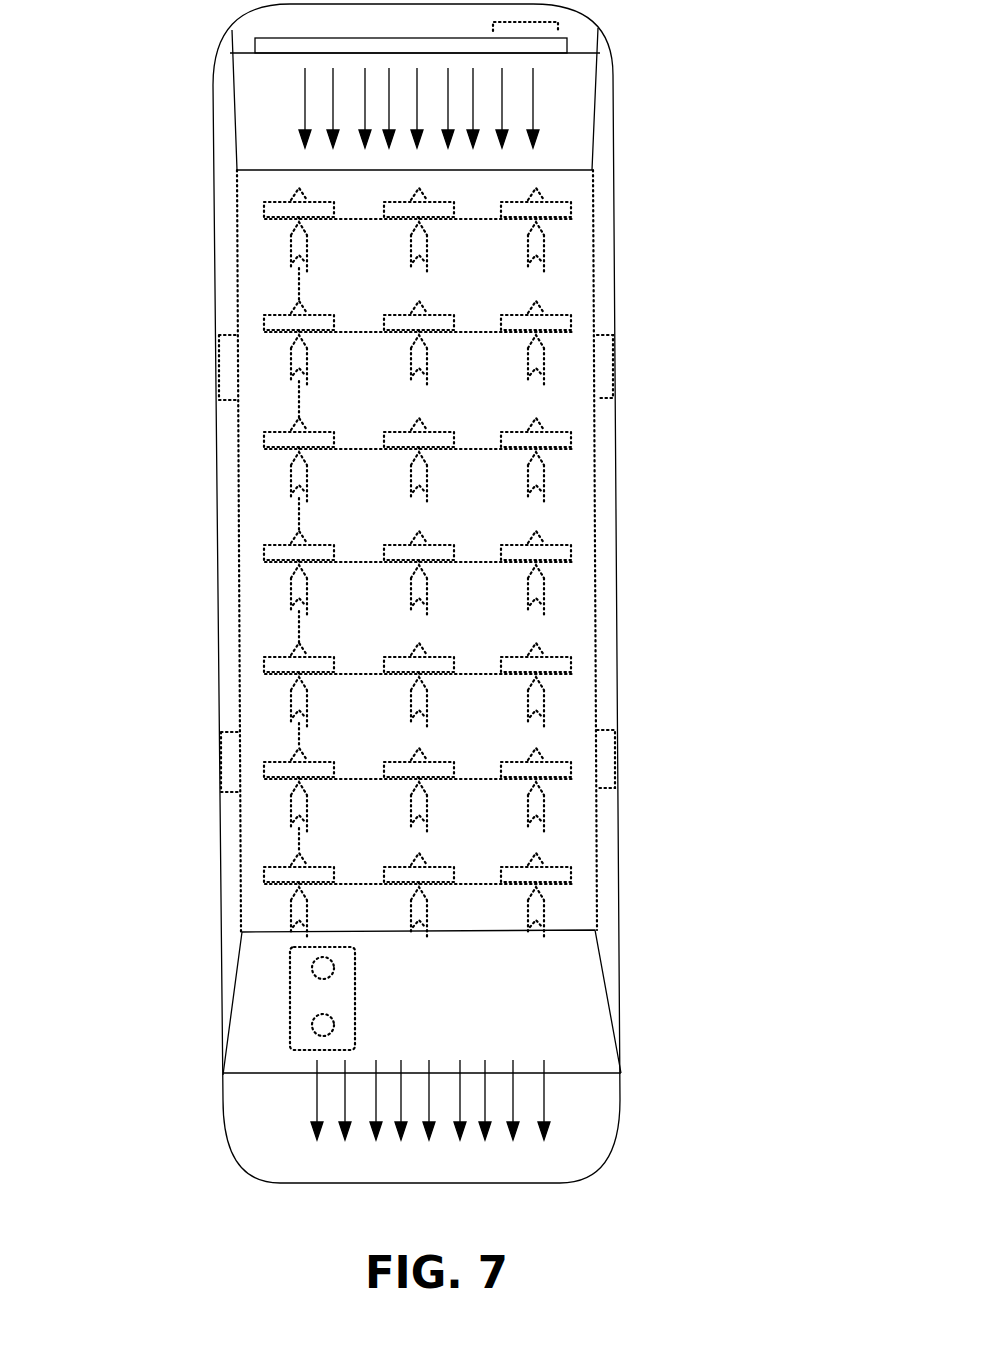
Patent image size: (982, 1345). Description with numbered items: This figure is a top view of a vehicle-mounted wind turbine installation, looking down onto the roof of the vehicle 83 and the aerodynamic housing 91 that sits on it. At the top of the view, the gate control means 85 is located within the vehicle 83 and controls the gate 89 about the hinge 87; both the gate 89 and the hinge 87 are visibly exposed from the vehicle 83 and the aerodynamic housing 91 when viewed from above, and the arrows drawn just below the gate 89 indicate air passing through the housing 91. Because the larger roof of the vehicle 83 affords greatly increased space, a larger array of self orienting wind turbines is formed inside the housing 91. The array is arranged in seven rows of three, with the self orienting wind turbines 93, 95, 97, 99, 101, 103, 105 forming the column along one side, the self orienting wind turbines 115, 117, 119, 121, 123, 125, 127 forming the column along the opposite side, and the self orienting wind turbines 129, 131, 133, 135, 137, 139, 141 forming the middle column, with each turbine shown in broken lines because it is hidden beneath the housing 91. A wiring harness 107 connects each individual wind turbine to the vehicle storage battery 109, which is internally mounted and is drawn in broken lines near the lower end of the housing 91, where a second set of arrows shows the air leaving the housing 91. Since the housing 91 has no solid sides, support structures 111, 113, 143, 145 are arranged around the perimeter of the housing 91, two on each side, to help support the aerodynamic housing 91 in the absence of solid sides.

The vehicle 83 is at (368, 22).
The gate control means 85 is at (535, 30).
The hinge 87 is at (297, 44).
The gate 89 is at (263, 112).
The aerodynamic housing 91 is at (600, 145).
The self orienting wind turbine 93 is at (558, 208).
The self orienting wind turbine 95 is at (558, 322).
The self orienting wind turbine 97 is at (560, 432).
The self orienting wind turbine 99 is at (563, 550).
The self orienting wind turbine 101 is at (563, 662).
The self orienting wind turbine 103 is at (563, 765).
The self orienting wind turbine 105 is at (563, 870).
The wiring harness 107 is at (477, 885).
The vehicle storage battery 109 is at (303, 1022).
The support structure 111 is at (602, 355).
The support structure 113 is at (605, 730).
The self orienting wind turbine 115 is at (283, 210).
The self orienting wind turbine 117 is at (283, 320).
The self orienting wind turbine 119 is at (283, 439).
The self orienting wind turbine 121 is at (288, 552).
The self orienting wind turbine 123 is at (288, 663).
The self orienting wind turbine 125 is at (288, 767).
The self orienting wind turbine 127 is at (288, 872).
The self orienting wind turbine 129 is at (410, 209).
The self orienting wind turbine 131 is at (410, 325).
The self orienting wind turbine 133 is at (413, 438).
The self orienting wind turbine 135 is at (413, 552).
The self orienting wind turbine 137 is at (413, 663).
The self orienting wind turbine 139 is at (417, 770).
The self orienting wind turbine 141 is at (413, 874).
The support structure 143 is at (225, 378).
The support structure 145 is at (228, 770).